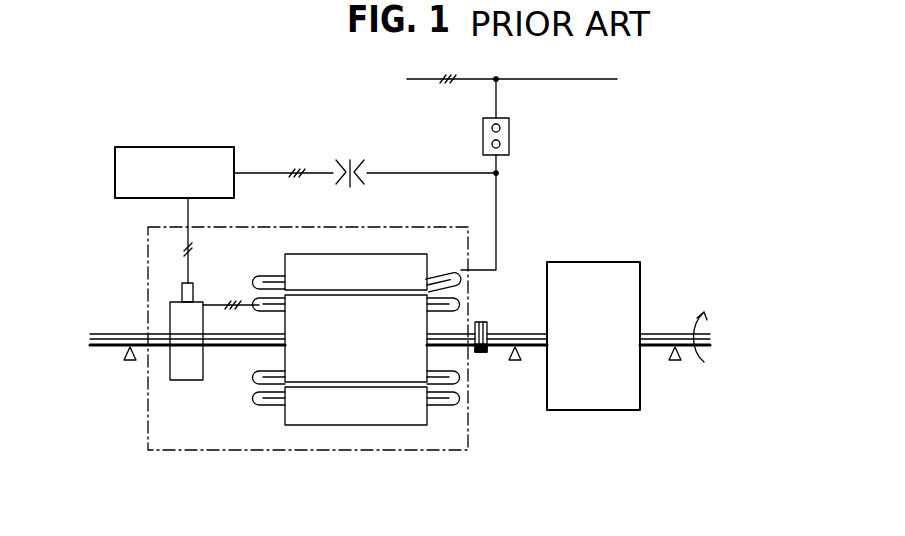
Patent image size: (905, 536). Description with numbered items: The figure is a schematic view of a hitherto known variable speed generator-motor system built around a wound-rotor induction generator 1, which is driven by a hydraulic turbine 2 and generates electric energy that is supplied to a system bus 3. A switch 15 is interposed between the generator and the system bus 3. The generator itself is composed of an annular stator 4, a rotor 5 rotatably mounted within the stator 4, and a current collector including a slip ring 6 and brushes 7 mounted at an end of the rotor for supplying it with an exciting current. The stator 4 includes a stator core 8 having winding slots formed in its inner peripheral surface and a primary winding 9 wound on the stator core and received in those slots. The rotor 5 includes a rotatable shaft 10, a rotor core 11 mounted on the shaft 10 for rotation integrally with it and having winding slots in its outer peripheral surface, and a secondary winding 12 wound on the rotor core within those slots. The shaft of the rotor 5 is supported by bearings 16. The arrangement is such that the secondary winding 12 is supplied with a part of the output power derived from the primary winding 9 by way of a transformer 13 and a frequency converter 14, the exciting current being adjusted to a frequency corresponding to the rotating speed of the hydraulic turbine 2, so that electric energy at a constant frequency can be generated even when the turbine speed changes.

The wound-rotor induction generator 1 is at (455, 452).
The hydraulic turbine 2 is at (607, 262).
The system bus 3 is at (570, 79).
The stator 4 is at (375, 255).
The rotor 5 is at (357, 382).
The slip ring 6 is at (170, 370).
The brushes 7 is at (182, 290).
The stator core 8 is at (313, 265).
The primary winding 9 is at (450, 270).
The rotatable shaft 10 is at (230, 350).
The rotor core 11 is at (313, 368).
The secondary winding 12 is at (253, 380).
The transformer 13 is at (353, 152).
The frequency converter 14 is at (228, 147).
The switch 15 is at (509, 136).
The bearings 16 is at (512, 360).